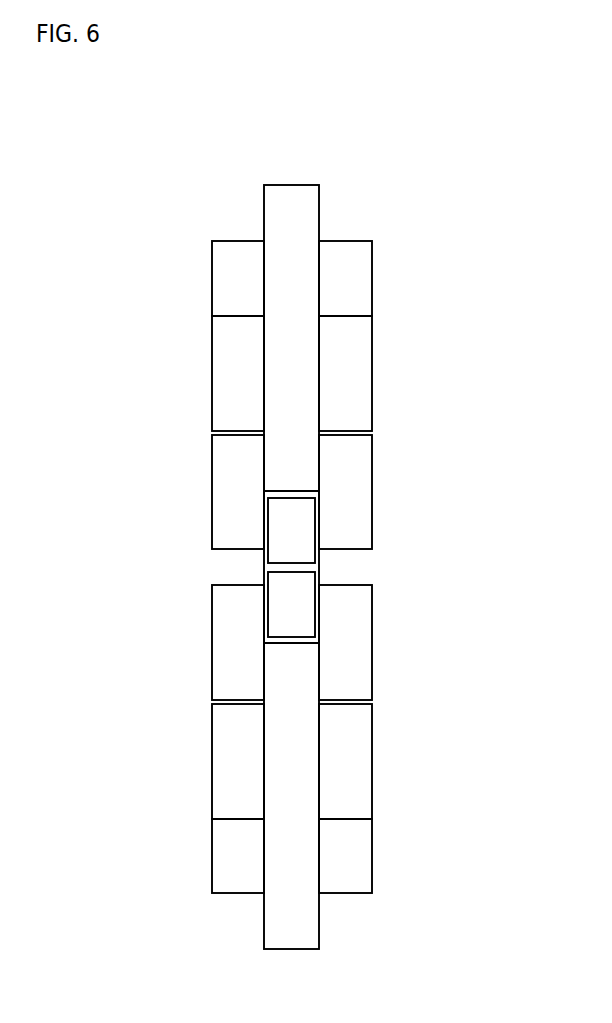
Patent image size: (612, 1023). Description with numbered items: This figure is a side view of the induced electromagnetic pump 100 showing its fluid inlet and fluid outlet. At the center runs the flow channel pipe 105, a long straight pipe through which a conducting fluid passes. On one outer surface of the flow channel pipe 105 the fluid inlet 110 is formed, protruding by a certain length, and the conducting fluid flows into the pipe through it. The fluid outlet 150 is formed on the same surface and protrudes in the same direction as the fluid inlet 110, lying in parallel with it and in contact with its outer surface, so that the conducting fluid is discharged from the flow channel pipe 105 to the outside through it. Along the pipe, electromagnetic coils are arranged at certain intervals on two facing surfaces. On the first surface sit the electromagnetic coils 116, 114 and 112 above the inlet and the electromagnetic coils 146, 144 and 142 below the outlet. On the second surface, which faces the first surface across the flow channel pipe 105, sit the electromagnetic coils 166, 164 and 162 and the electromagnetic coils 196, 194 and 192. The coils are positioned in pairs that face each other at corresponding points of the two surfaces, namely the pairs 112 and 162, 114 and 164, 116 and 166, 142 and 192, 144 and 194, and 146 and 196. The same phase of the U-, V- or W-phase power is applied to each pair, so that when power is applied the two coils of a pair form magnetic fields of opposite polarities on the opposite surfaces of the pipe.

The induced electromagnetic pump 100 is at (98, 100).
The flow channel pipe 105 is at (293, 185).
The fluid inlet 110 is at (297, 526).
The fluid outlet 150 is at (297, 604).
The electromagnetic coil 112 is at (212, 462).
The electromagnetic coil 114 is at (212, 365).
The electromagnetic coil 116 is at (212, 275).
The electromagnetic coil 142 is at (212, 854).
The electromagnetic coil 144 is at (212, 756).
The electromagnetic coil 146 is at (212, 660).
The electromagnetic coil 162 is at (372, 462).
The electromagnetic coil 164 is at (372, 365).
The electromagnetic coil 166 is at (372, 275).
The electromagnetic coil 192 is at (372, 854).
The electromagnetic coil 194 is at (372, 756).
The electromagnetic coil 196 is at (372, 660).